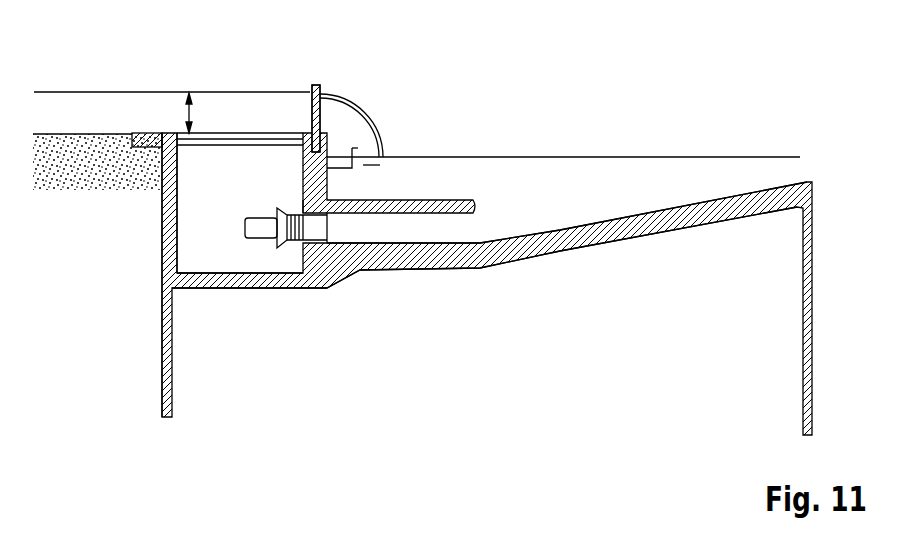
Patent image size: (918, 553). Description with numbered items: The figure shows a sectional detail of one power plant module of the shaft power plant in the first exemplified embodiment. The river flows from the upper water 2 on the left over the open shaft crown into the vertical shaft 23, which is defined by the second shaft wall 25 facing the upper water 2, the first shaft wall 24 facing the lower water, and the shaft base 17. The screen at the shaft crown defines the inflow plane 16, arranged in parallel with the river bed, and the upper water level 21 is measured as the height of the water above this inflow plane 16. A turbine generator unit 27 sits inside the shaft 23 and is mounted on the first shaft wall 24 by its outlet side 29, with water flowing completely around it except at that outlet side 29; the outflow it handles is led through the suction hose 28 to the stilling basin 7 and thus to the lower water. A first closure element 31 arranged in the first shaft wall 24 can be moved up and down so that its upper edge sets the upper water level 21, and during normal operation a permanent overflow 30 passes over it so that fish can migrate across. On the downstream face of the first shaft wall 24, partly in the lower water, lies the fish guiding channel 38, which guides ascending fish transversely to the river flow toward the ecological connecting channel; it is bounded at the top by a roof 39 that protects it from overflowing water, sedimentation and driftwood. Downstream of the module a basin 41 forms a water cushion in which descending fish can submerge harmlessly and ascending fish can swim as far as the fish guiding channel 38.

The upper water 2 is at (88, 103).
The stilling basin 7 is at (563, 170).
The inflow plane 16 is at (230, 113).
The shaft base 17 is at (275, 288).
The upper water level 21 is at (186, 118).
The shaft 23 is at (208, 262).
The first shaft wall 24 is at (327, 172).
The second shaft wall 25 is at (162, 237).
The turbine generator unit 27 is at (248, 238).
The suction hose 28 is at (425, 237).
The outlet side 29 is at (292, 205).
The permanent overflow 30 is at (342, 143).
The first closure element 31 is at (310, 112).
The fish guiding channel 38 is at (358, 154).
The roof 39 is at (355, 148).
The basin 41 is at (380, 165).